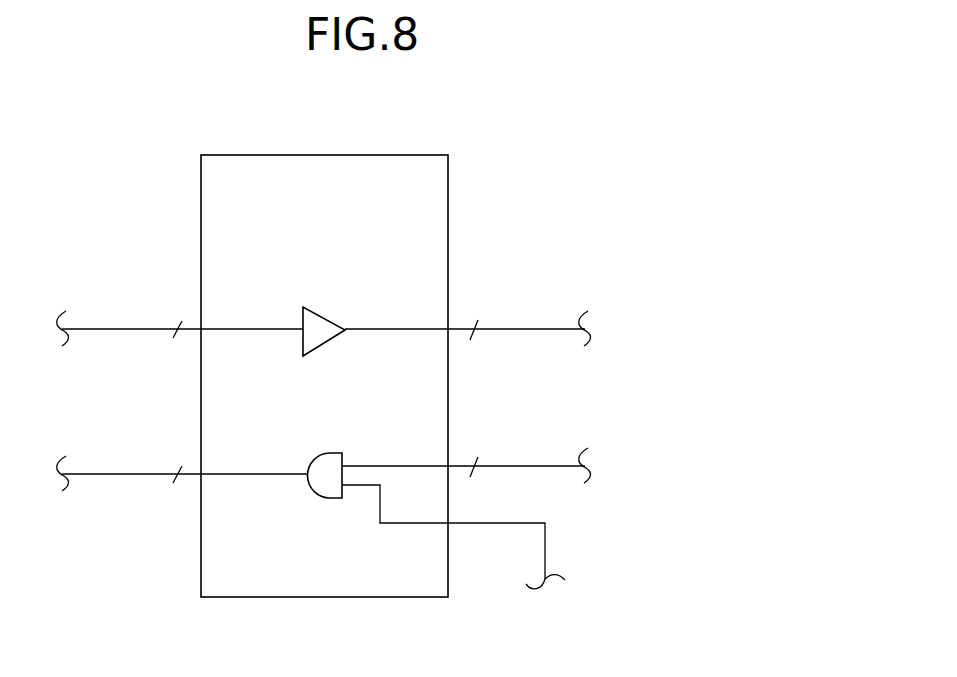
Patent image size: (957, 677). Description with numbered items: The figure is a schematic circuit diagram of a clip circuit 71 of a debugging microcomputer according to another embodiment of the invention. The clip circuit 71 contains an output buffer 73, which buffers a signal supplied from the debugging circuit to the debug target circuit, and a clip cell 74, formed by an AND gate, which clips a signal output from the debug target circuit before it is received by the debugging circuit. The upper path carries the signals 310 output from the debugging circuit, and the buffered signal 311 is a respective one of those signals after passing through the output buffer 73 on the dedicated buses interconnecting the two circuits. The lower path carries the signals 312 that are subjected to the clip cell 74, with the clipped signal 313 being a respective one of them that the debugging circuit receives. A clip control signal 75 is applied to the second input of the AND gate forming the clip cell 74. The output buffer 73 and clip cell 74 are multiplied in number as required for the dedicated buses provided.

The clip circuit 71 is at (334, 155).
The output buffer 73 is at (332, 319).
The clip cell 74 is at (335, 453).
The clip control signal 75 is at (547, 523).
The signals output from the debugging circuit 310 is at (119, 329).
The buffered signal 311 is at (526, 329).
The signals received by the debugging circuit 312 is at (526, 466).
The clipped signal 313 is at (119, 474).